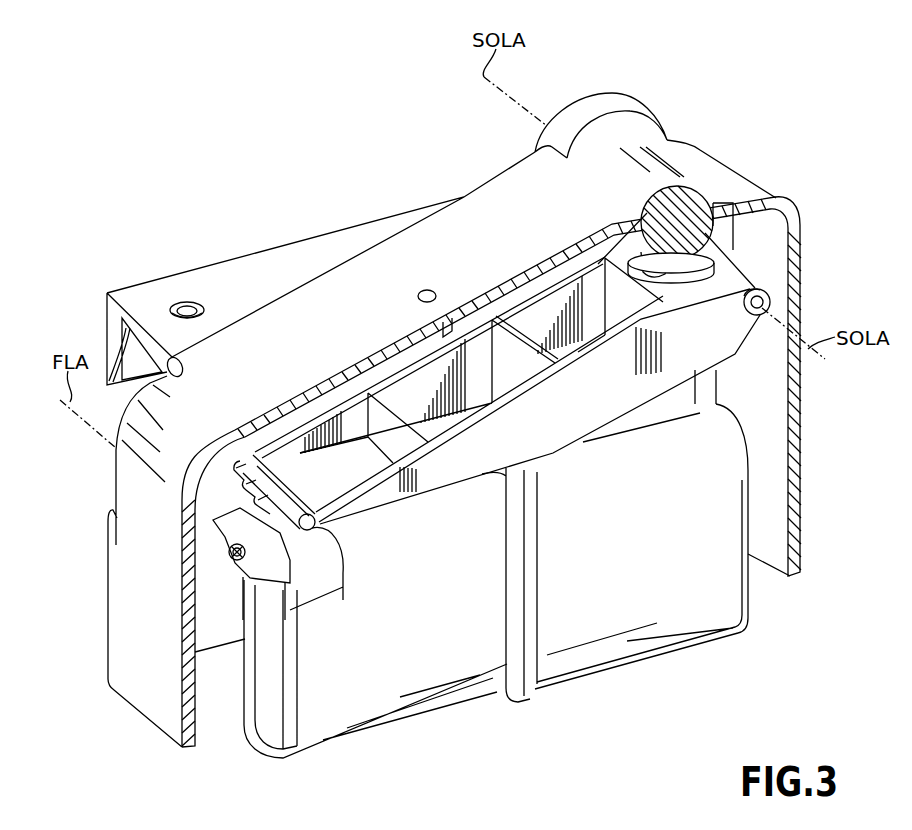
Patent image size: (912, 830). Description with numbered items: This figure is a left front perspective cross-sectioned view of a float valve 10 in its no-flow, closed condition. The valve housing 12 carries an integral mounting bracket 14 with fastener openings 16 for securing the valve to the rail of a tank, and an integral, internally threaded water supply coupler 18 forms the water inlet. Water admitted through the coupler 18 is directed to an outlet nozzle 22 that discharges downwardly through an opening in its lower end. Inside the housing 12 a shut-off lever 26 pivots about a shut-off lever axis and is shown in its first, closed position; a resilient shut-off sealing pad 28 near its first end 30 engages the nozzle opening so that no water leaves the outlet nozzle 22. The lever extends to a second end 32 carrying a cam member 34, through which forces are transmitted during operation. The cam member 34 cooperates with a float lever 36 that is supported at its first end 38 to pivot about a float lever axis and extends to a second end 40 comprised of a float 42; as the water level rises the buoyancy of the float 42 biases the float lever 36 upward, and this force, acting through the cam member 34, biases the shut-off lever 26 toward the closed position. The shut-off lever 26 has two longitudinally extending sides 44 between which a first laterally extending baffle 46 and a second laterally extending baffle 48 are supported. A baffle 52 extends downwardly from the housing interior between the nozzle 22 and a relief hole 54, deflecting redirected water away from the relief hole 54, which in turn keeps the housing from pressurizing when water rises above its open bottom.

The float valve 10 is at (567, 66).
The valve housing 12 is at (803, 440).
The mounting bracket 14 is at (241, 254).
The fastener openings 16 is at (189, 293).
The water supply coupler 18 is at (645, 95).
The outlet nozzle 22 is at (716, 262).
The shut-off lever 26 is at (657, 406).
The shut-off sealing pad 28 is at (701, 283).
The first end of shut-off lever 30 is at (771, 205).
The second end of shut-off lever 32 is at (236, 460).
The cam member 34 is at (283, 494).
The float lever 36 is at (656, 661).
The first end of float lever 38 is at (213, 527).
The second end of float lever 40 is at (746, 631).
The float 42 is at (407, 722).
The longitudinally extending sides 44 is at (489, 305).
The first laterally extending baffle 46 is at (503, 318).
The second laterally extending baffle 48 is at (393, 407).
The baffle 52 is at (447, 330).
The relief hole 54 is at (418, 292).